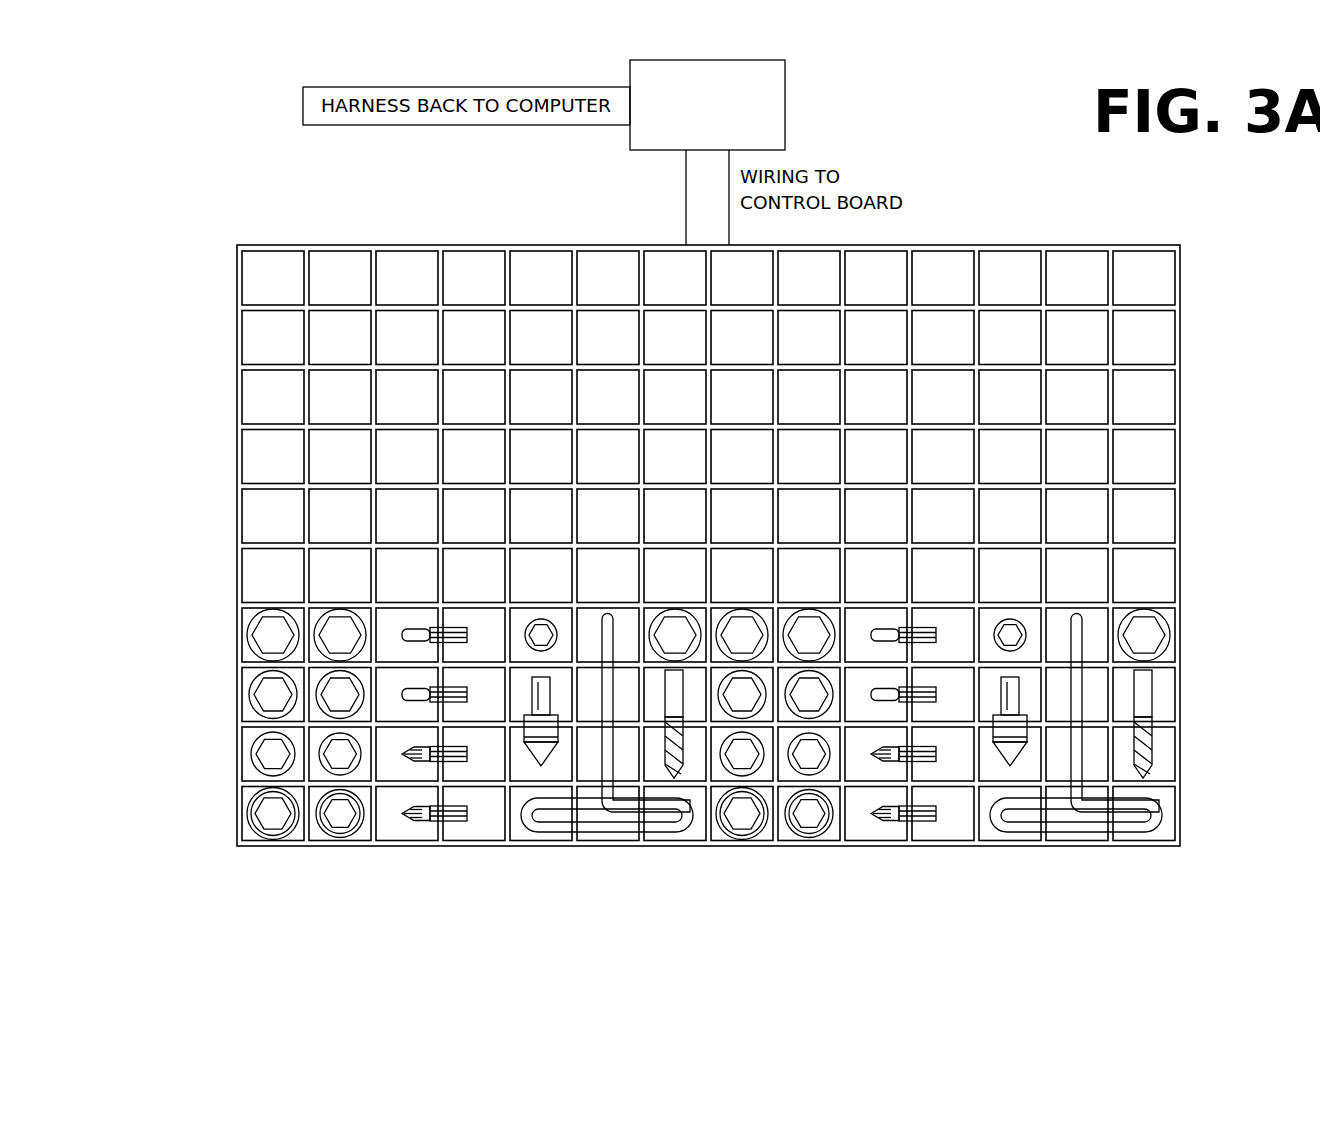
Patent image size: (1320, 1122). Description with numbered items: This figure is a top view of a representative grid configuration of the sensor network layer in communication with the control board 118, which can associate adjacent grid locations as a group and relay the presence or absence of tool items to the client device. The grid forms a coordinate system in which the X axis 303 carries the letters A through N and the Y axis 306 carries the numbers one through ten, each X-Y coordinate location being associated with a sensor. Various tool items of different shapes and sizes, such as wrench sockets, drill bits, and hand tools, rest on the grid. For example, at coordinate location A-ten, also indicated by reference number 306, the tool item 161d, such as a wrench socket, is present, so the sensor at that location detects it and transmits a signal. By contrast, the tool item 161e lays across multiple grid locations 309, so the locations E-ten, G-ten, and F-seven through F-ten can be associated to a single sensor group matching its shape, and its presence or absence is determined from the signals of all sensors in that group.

The control board 118 is at (780, 60).
The X axis 303 is at (734, 554).
The Y axis 306 is at (223, 240).
The tool item 161d is at (275, 834).
The tool item 161e is at (522, 848).
The multiple grid locations 309 is at (645, 777).